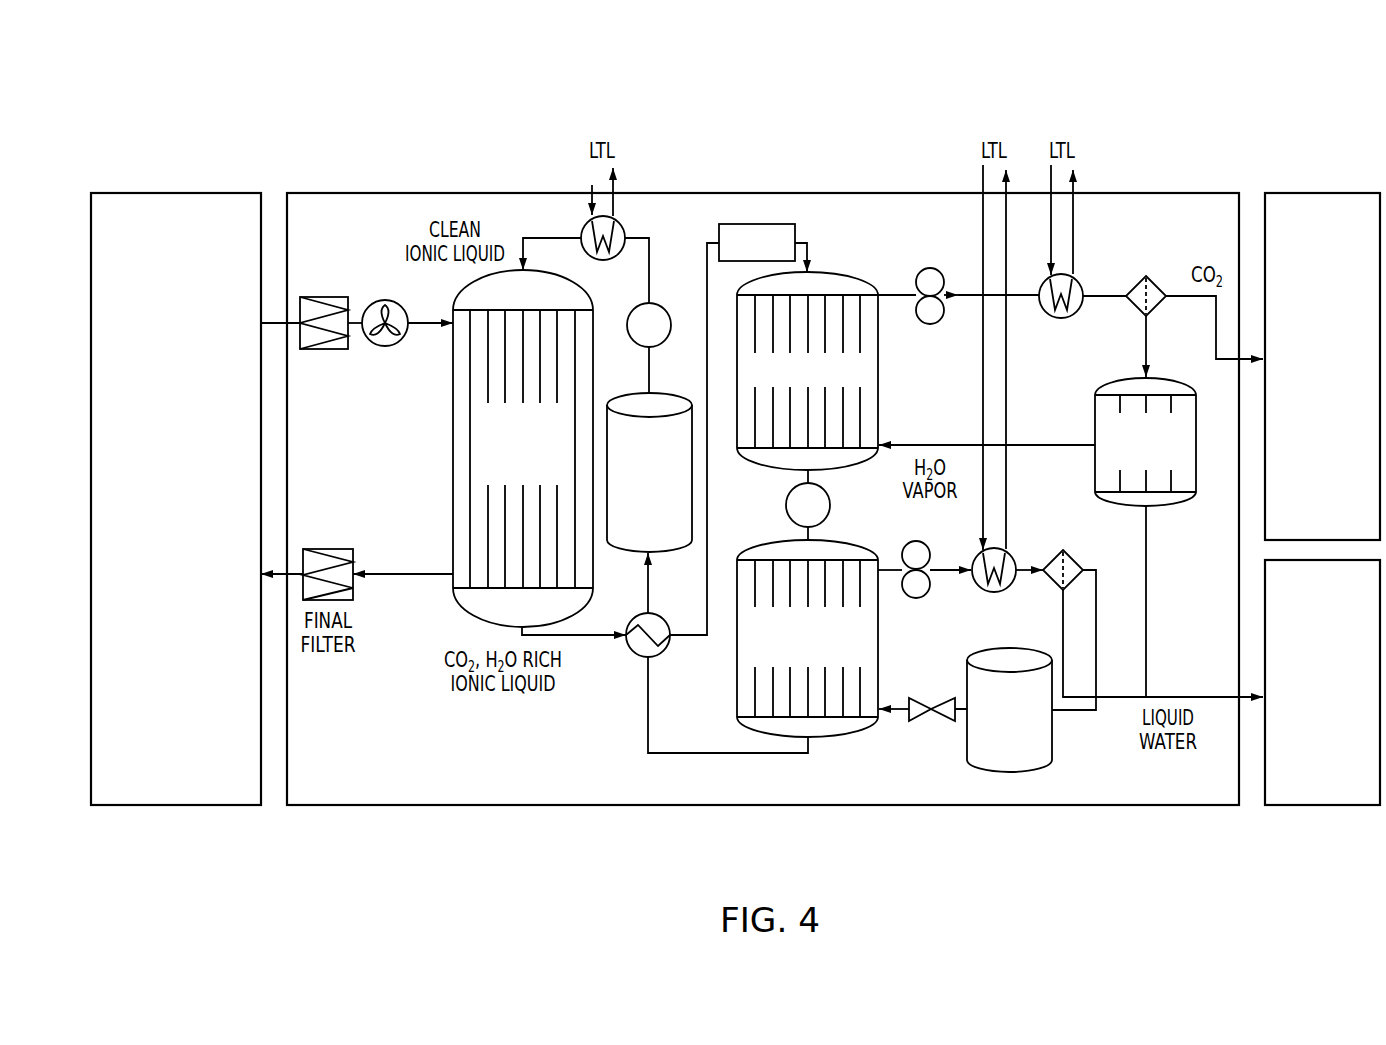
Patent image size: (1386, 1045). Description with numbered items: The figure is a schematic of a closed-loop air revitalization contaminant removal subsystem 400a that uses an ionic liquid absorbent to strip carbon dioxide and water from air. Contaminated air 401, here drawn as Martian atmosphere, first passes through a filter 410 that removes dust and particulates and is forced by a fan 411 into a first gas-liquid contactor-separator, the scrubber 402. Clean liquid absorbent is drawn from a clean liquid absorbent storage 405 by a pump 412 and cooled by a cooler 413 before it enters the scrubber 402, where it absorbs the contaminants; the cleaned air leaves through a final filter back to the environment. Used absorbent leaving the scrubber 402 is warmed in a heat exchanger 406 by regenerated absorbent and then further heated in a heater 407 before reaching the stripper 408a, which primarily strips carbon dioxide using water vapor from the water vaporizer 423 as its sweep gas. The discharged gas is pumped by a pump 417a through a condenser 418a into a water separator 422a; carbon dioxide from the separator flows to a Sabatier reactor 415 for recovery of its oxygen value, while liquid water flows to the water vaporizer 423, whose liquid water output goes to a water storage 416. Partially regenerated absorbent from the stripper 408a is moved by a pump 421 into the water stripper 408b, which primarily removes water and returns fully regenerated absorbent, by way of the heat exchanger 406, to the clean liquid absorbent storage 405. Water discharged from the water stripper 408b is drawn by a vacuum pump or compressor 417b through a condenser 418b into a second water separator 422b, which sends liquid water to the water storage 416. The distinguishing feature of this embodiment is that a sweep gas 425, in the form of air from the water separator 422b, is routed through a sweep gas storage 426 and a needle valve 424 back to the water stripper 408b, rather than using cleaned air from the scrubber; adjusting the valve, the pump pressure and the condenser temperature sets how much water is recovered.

The contaminant removal subsystem 400a is at (862, 88).
The contaminated air 401 is at (176, 640).
The scrubber 402 is at (452, 435).
The clean liquid absorbent storage 405 is at (621, 395).
The heat exchanger 406 is at (630, 651).
The heater 407 is at (758, 224).
The stripper 408a is at (840, 272).
The water stripper 408b is at (838, 541).
The filter 410 is at (331, 297).
The fan 411 is at (385, 300).
The pump 412 is at (655, 303).
The cooler 413 is at (618, 218).
The Sabatier reactor 415 is at (1320, 193).
The water storage 416 is at (1320, 805).
The pump 417a is at (940, 268).
The vacuum pump and/or compressor 417b is at (916, 600).
The condenser 418a is at (1080, 281).
The condenser 418b is at (1010, 556).
The pump 421 is at (830, 506).
The water separator 422a is at (1147, 276).
The water separator 422b is at (1080, 556).
The water vaporizer 423 is at (1095, 410).
The needle valve 424 is at (922, 722).
The sweep gas 425 is at (1092, 715).
The sweep gas storage 426 is at (986, 656).